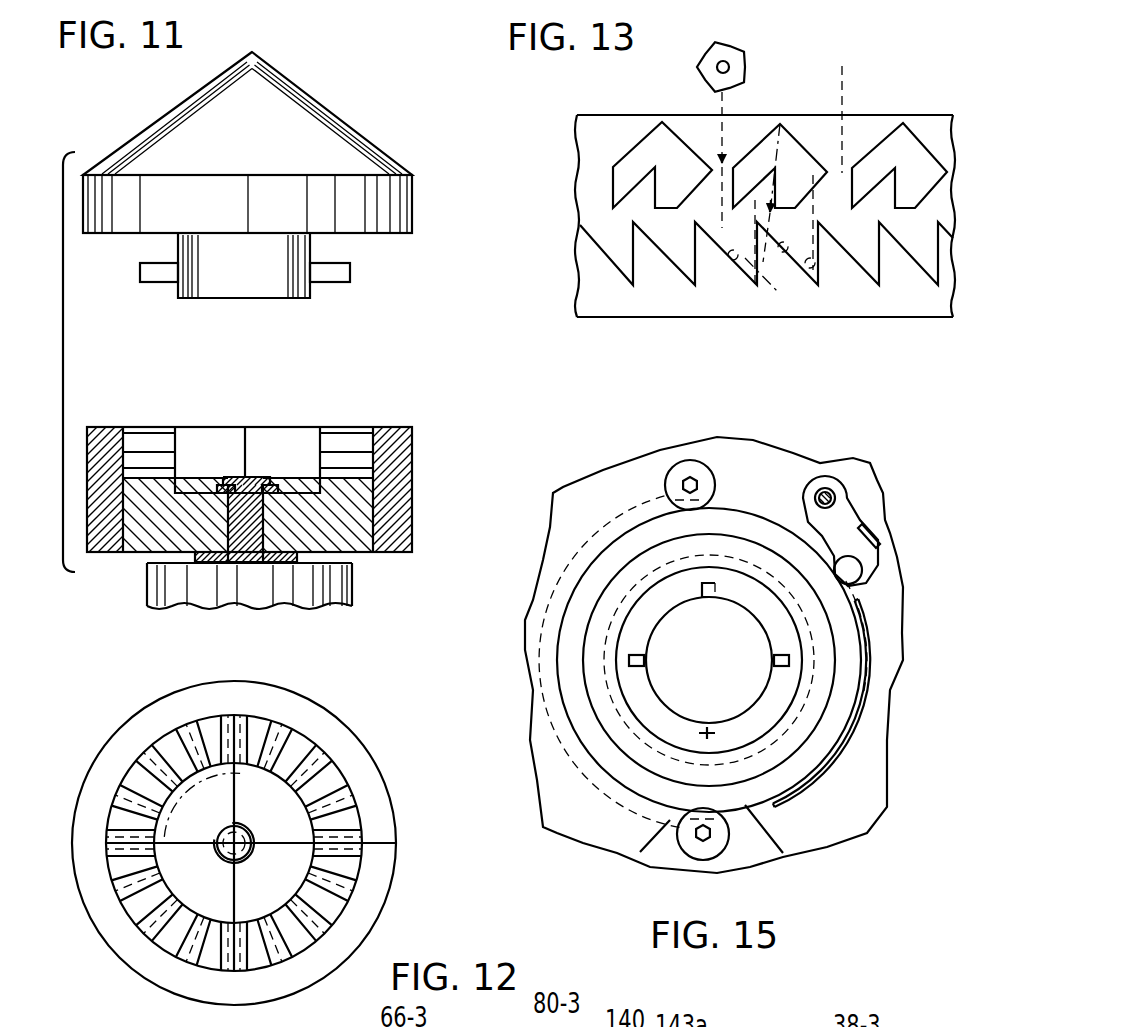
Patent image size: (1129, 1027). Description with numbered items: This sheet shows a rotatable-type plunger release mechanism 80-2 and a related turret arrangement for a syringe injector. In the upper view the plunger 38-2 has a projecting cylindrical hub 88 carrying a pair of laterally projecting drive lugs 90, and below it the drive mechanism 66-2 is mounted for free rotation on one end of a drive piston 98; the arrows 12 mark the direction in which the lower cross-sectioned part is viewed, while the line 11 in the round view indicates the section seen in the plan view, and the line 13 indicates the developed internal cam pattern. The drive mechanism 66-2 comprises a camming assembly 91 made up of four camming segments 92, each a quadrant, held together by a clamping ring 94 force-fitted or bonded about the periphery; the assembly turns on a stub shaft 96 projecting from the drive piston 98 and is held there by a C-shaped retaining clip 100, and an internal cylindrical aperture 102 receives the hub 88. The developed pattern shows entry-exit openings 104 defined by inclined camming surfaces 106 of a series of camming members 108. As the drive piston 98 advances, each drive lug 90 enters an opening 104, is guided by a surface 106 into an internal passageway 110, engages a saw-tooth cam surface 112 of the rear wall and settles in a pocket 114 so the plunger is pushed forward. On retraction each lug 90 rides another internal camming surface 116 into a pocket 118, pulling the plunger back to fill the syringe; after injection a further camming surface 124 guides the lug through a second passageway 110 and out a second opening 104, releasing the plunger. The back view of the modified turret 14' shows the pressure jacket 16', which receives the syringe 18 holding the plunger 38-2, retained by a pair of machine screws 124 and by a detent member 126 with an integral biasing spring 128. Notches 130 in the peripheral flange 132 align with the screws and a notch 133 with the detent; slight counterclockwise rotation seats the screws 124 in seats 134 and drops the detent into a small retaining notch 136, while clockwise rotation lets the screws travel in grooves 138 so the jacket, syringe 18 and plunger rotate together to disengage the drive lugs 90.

In FIG. 11, the plunger 38-2 is at (315, 110).
In FIG. 15, the plunger 38-2 is at (632, 675).
In FIG. 11, the drive lugs 90 is at (150, 272).
In FIG. 13, the drive lugs 90 is at (729, 62).
In FIG. 15, the drive lugs 90 is at (625, 625).
In FIG. 11, the cylindrical hub 88 is at (285, 300).
In FIG. 13, the cylindrical hub 88 is at (712, 55).
In FIG. 15, the cylindrical hub 88 is at (669, 692).
In FIG. 11, the plunger release mechanism 80-2 is at (408, 292).
In FIG. 11, the section line 12— 12 is at (150, 353).
In FIG. 12, the section line 11— 11 is at (63, 845).
In FIG. 12, the view line 13 is at (225, 780).
In FIG. 11, the drive mechanism 66-2 is at (442, 420).
In FIG. 12, the drive mechanism 66-2 is at (352, 704).
In FIG. 13, the drive mechanism 66-2 is at (612, 88).
In FIG. 11, the clamping ring 94 is at (405, 482).
In FIG. 12, the clamping ring 94 is at (303, 710).
In FIG. 11, the internal cylindrical aperture 102 is at (270, 435).
In FIG. 12, the internal cylindrical aperture 102 is at (256, 777).
In FIG. 11, the camming segments 92 is at (130, 548).
In FIG. 12, the camming segments 92 is at (183, 763).
In FIG. 13, the camming segments 92 is at (932, 125).
In FIG. 11, the stub shaft 96 is at (240, 565).
In FIG. 12, the stub shaft 96 is at (242, 852).
In FIG. 11, the C-shaped retaining clip 100 is at (215, 488).
In FIG. 12, the C-shaped retaining clip 100 is at (222, 862).
In FIG. 11, the drive piston 98 is at (330, 603).
In FIG. 12, the entry-exit openings 104 is at (152, 767).
In FIG. 13, the entry-exit openings 104 is at (745, 120).
In FIG. 12, the inclined camming surfaces 106 is at (102, 818).
In FIG. 13, the inclined camming surfaces 106 is at (748, 143).
In FIG. 12, the camming members 108 is at (185, 740).
In FIG. 13, the camming members 108 is at (647, 153).
In FIG. 12, the internal passageway 110 is at (232, 717).
In FIG. 13, the internal passageway 110 is at (712, 180).
In FIG. 12, the camming assembly 91 is at (207, 708).
In FIG. 13, the camming assembly 91 is at (842, 60).
In FIG. 13, the internal camming surface 116 is at (690, 250).
In FIG. 13, the machine screws 124 is at (807, 210).
In FIG. 15, the machine screws 124 is at (676, 468).
In FIG. 13, the pocket 118 is at (813, 170).
In FIG. 13, the cam surfaces 112 is at (765, 258).
In FIG. 13, the pocket 114 is at (753, 277).
In FIG. 15, the pressure jacket 16' is at (711, 655).
In FIG. 15, the grooves 138 is at (587, 555).
In FIG. 15, the notches 130 is at (645, 525).
In FIG. 15, the peripheral flange 132 is at (598, 782).
In FIG. 15, the syringe 18 is at (627, 645).
In FIG. 15, the seats 134 is at (720, 497).
In FIG. 15, the notch 133 is at (783, 510).
In FIG. 15, the turret 14' is at (847, 501).
In FIG. 15, the detent member 126 is at (835, 505).
In FIG. 15, the biasing spring 128 is at (872, 527).
In FIG. 15, the retaining notch 136 is at (864, 566).